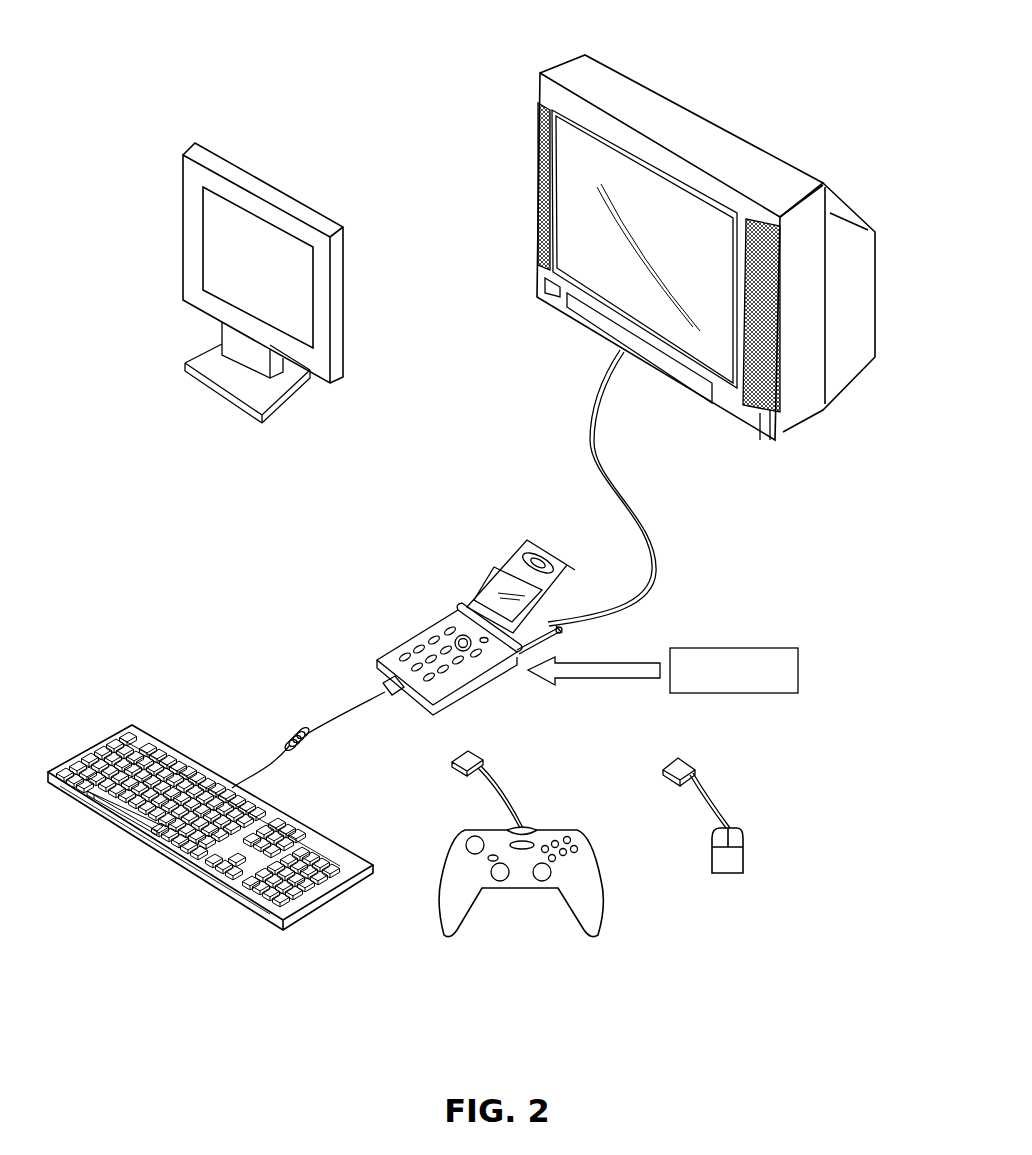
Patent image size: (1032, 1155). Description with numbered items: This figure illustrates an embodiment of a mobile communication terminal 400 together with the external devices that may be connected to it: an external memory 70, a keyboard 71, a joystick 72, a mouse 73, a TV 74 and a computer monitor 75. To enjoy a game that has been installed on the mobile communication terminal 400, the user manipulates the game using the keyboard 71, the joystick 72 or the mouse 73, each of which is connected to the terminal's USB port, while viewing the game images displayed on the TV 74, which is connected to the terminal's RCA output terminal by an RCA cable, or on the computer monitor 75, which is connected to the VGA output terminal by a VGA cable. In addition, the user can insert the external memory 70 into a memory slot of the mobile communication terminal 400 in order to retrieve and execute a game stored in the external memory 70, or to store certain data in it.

The TV 74 is at (722, 128).
The computer monitor 75 is at (292, 195).
The mobile communication terminal 400 is at (487, 573).
The external memory 70 is at (798, 673).
The keyboard 71 is at (332, 900).
The joystick 72 is at (477, 905).
The mouse 73 is at (743, 855).